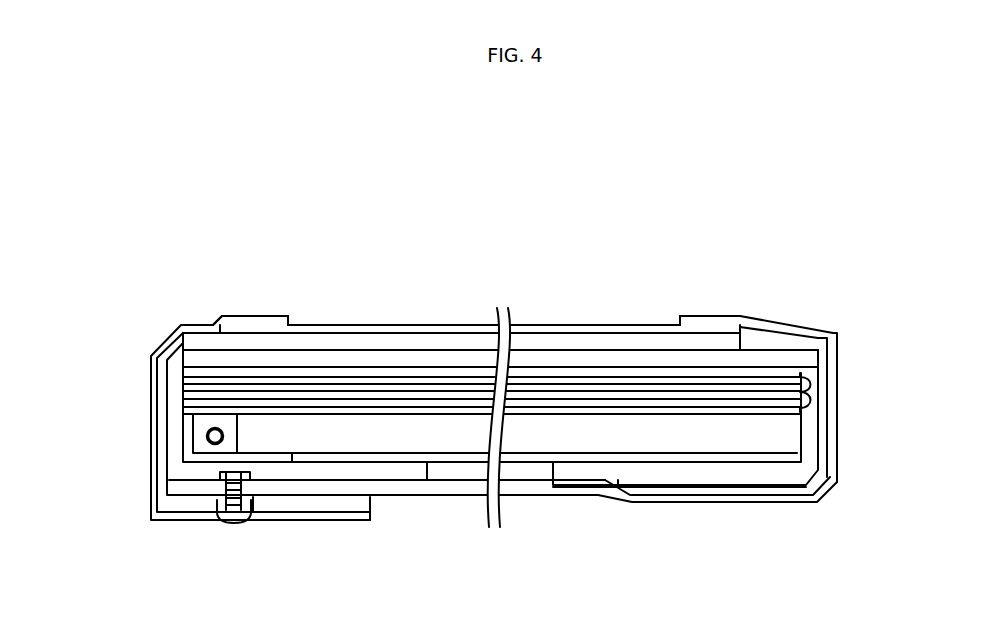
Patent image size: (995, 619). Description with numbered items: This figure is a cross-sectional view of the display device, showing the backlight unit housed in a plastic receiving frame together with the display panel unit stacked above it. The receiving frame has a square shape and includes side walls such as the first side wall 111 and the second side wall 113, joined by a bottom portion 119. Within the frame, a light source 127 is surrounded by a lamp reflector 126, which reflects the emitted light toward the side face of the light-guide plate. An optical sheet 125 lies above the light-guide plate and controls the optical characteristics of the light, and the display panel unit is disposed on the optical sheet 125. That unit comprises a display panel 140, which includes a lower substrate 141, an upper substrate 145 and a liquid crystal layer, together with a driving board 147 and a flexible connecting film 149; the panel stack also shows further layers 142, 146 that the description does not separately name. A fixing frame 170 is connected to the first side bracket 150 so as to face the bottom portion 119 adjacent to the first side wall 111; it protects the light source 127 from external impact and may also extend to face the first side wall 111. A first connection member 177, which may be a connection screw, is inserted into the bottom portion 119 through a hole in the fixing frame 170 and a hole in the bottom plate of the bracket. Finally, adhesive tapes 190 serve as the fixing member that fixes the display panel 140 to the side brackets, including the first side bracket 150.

The first side wall 111 is at (176, 388).
The second side wall 113 is at (812, 447).
The bottom portion 119 is at (407, 471).
The optical sheet 125 is at (812, 390).
The lamp reflector 126 is at (190, 447).
The light source 127 is at (203, 436).
The display panel 140 is at (723, 252).
The lower substrate 141 is at (658, 358).
The display layer 142 is at (704, 373).
The upper substrate 145 is at (612, 346).
The display layer 146 is at (568, 334).
The driving board 147 is at (697, 486).
The flexible connecting film 149 is at (808, 343).
The first side bracket 150 is at (535, 489).
The fixing frame 170 is at (322, 504).
The first connection member 177 is at (229, 512).
The adhesive tape 190 is at (248, 318).